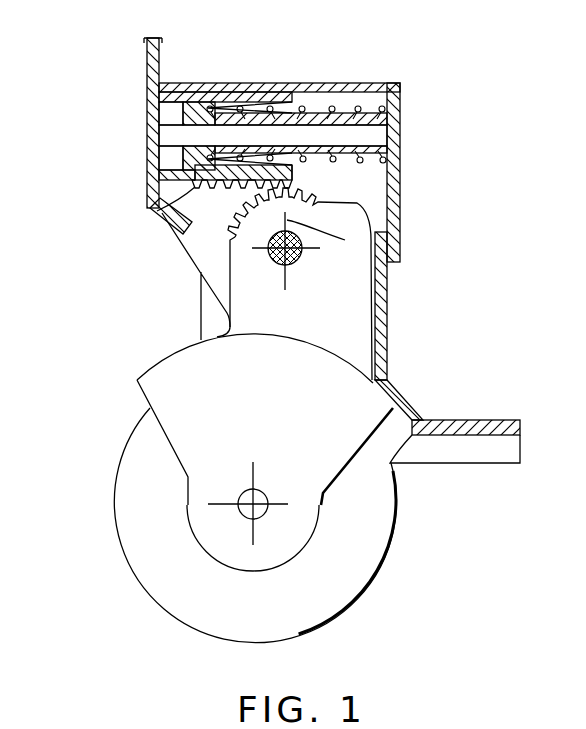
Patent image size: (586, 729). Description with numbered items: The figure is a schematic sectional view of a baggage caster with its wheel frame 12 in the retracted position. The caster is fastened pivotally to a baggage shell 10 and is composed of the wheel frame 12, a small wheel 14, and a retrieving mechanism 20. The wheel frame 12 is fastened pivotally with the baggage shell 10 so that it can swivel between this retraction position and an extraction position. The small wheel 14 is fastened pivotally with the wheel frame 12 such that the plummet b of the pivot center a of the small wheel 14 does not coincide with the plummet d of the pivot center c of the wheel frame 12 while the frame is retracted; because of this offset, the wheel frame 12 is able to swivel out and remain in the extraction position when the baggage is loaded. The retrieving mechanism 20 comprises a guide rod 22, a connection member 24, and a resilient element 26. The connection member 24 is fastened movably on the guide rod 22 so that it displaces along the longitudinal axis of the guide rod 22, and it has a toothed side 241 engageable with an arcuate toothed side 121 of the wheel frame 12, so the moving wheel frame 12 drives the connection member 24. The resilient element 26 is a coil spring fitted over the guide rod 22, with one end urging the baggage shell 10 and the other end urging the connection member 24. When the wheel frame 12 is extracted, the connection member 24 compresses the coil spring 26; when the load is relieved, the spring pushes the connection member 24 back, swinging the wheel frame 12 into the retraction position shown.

The baggage shell 10 is at (402, 224).
The wheel frame 12 is at (160, 366).
The arcuate toothed side 121 is at (218, 222).
The small wheel 14 is at (117, 478).
The retrieving mechanism 20 is at (252, 62).
The guide rod 22 is at (341, 127).
The connection member 24 is at (201, 92).
The toothed side 241 is at (157, 211).
The resilient element 26 is at (305, 102).
The pivot center of the small wheel a is at (243, 517).
The plummet of the pivot center of the small wheel b is at (252, 473).
The pivot center of the wheel frame c is at (300, 257).
The plummet of the pivot center of the wheel frame d is at (345, 240).